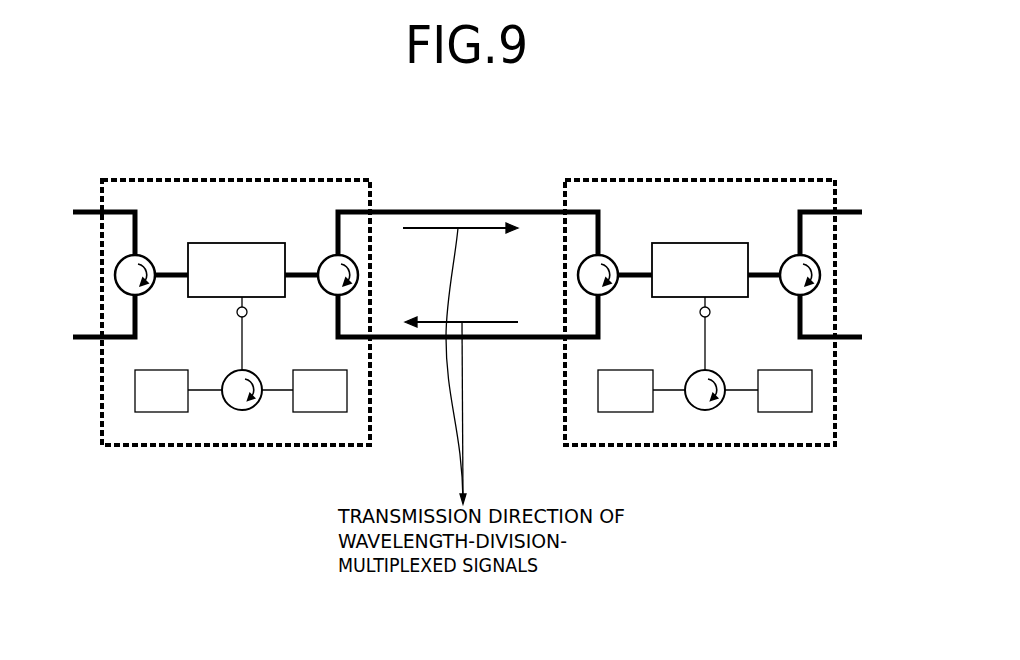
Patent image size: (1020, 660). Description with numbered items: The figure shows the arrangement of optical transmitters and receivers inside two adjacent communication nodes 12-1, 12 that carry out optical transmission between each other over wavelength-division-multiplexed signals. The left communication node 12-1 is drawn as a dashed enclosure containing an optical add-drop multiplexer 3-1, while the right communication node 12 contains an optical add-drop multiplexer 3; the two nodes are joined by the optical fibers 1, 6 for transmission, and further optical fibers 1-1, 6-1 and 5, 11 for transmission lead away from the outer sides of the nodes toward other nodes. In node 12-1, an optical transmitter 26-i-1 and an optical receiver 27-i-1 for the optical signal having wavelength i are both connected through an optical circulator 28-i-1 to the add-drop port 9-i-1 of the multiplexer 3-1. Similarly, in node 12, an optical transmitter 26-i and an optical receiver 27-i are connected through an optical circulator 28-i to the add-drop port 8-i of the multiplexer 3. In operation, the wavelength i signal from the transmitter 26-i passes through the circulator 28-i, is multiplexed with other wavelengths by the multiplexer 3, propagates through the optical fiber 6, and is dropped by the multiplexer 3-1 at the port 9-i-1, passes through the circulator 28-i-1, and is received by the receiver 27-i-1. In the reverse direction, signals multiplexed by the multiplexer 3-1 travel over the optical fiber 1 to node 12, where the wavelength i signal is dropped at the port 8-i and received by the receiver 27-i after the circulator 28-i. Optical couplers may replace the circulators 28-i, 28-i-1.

The optical fiber for transmission 1 is at (420, 209).
The optical fiber for transmission 6 is at (512, 340).
The optical fiber for transmission 1-1 is at (88, 210).
The optical fiber for transmission 6-1 is at (88, 340).
The optical fiber for transmission 5 is at (848, 210).
The optical fiber for transmission 11 is at (848, 340).
The communication node 12-1 is at (256, 180).
The communication node 12 is at (606, 180).
The optical add-drop multiplexer 3-1 is at (238, 243).
The optical add-drop multiplexer 3 is at (700, 243).
The add-drop port 9-i-1 is at (247, 315).
The add-drop port 8-i is at (700, 315).
The optical transmitter 26-i-1 is at (160, 413).
The optical circulator 28-i-1 is at (243, 411).
The optical receiver 27-i-1 is at (320, 413).
The optical transmitter 26-i is at (623, 413).
The optical circulator 28-i is at (706, 411).
The optical receiver 27-i is at (784, 413).